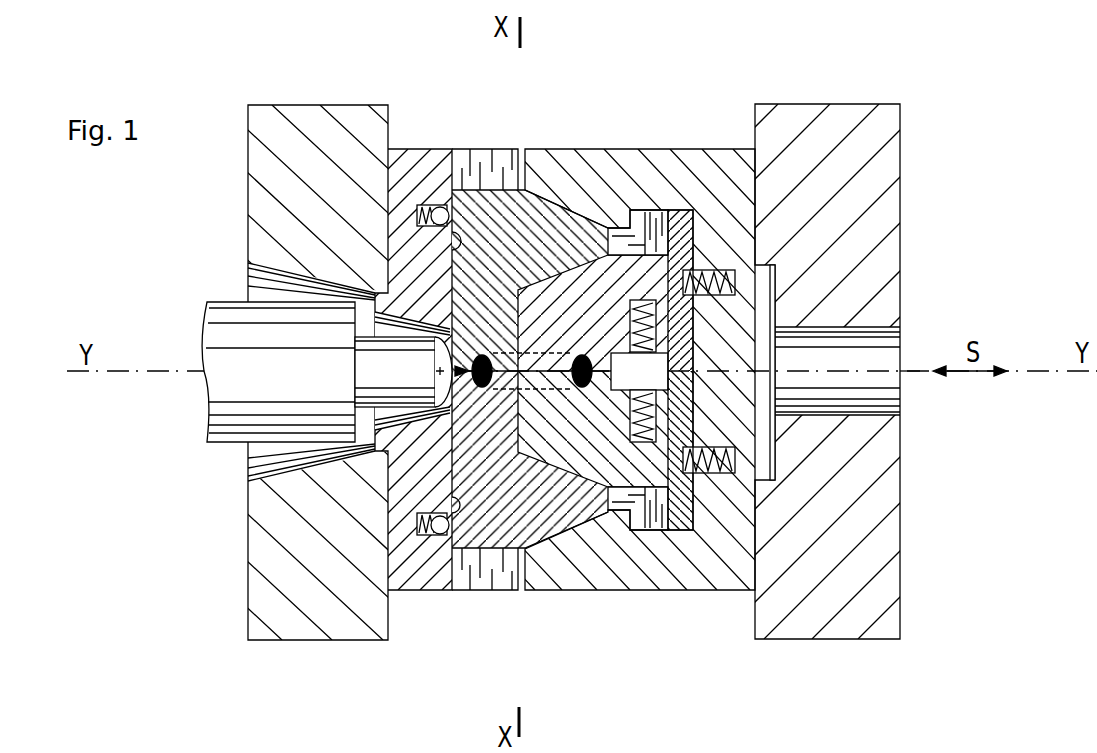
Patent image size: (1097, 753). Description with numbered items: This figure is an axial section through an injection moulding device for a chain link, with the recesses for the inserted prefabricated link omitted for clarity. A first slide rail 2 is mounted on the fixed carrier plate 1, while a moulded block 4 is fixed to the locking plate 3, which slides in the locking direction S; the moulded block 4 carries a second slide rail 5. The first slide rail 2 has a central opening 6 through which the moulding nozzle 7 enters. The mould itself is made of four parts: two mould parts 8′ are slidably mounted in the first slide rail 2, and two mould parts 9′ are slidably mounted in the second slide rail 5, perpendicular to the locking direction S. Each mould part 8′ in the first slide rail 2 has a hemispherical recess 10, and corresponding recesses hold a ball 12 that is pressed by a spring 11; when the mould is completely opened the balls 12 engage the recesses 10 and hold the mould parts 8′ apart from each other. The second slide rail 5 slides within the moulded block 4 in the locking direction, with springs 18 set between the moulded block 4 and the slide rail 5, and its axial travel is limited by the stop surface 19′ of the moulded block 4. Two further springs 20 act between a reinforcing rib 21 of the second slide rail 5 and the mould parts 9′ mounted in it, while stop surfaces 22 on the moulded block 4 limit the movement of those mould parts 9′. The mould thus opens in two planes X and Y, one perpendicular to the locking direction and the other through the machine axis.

The fixed carrier plate 1 is at (301, 128).
The first slide rail 2 is at (405, 235).
The locking plate 3 is at (781, 122).
The moulded block 4 is at (632, 162).
The second slide rail 5 is at (685, 224).
The central opening 6 is at (393, 418).
The moulding nozzle 7 is at (233, 427).
The mould part 8′ is at (483, 206).
The mould part 9′ is at (566, 300).
The hemispherical recess 10 is at (449, 210).
The spring 11 is at (413, 228).
The ball 12 is at (428, 206).
The spring 18 is at (717, 272).
The stop surface 19′ is at (624, 212).
The spring 20 is at (648, 300).
The reinforcing rib 21 is at (660, 520).
The stop surface 22 is at (621, 232).